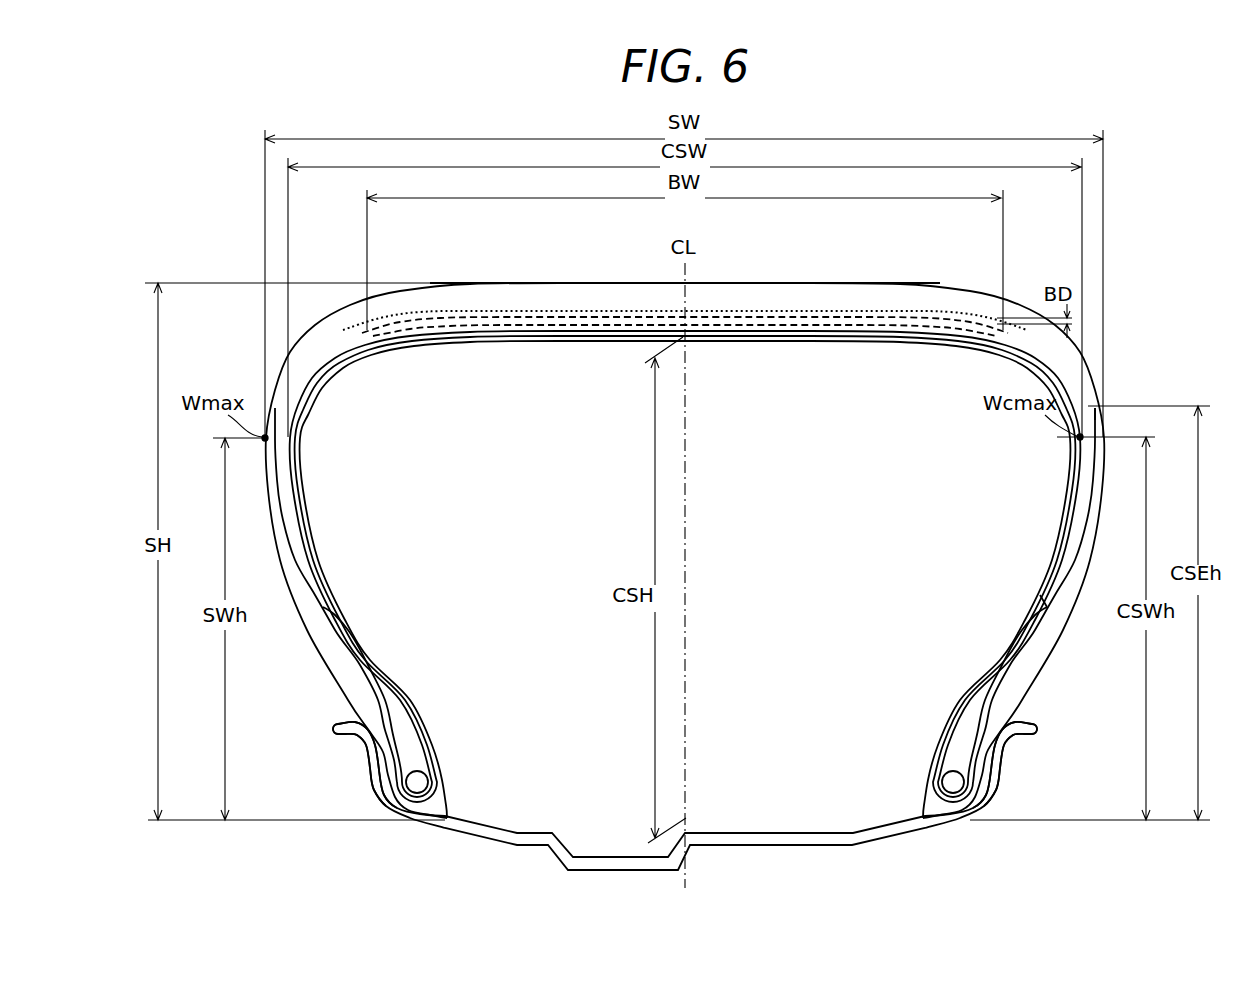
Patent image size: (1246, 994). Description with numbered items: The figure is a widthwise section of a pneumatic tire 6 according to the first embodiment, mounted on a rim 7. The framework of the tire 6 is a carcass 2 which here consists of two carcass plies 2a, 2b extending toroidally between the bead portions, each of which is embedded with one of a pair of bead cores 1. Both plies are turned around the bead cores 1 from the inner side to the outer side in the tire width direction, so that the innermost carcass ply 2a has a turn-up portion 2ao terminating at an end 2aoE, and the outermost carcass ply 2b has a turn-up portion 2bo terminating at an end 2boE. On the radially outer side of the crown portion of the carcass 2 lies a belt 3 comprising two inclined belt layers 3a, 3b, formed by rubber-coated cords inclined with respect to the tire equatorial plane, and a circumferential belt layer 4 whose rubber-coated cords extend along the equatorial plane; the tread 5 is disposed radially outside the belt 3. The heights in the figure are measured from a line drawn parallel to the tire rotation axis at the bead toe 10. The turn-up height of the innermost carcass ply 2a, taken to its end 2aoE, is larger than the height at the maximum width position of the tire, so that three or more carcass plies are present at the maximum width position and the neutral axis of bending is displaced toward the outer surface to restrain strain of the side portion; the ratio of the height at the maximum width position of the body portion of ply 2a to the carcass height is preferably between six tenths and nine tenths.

The bead core 1 is at (420, 781).
The carcass 2 is at (685, 566).
The carcass ply 2a is at (950, 398).
The carcass ply 2b is at (928, 333).
The turn-up portion of carcass ply 2ao is at (1020, 655).
The end of turn-up portion of carcass ply 2aoE is at (1097, 390).
The turn-up portion of carcass ply 2bo is at (1003, 663).
The end of turn-up portion of carcass ply 2boE is at (1040, 585).
The belt 3 is at (685, 377).
The inclined belt layer 3a is at (752, 329).
The inclined belt layer 3b is at (792, 319).
The circumferential belt layer 4 is at (867, 311).
The tread 5 is at (540, 283).
The tire 6 is at (246, 346).
The rim 7 is at (1003, 748).
The bead toe 10 is at (450, 817).